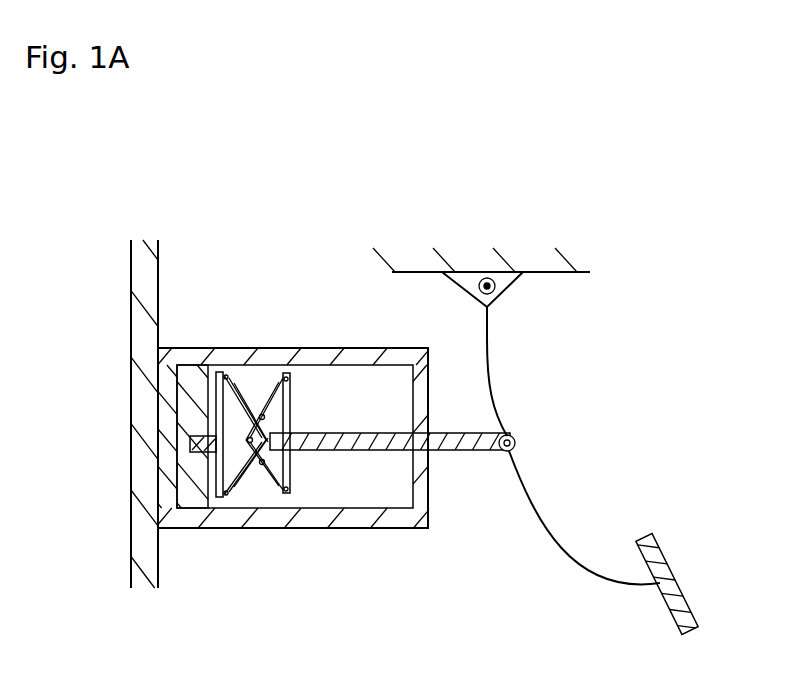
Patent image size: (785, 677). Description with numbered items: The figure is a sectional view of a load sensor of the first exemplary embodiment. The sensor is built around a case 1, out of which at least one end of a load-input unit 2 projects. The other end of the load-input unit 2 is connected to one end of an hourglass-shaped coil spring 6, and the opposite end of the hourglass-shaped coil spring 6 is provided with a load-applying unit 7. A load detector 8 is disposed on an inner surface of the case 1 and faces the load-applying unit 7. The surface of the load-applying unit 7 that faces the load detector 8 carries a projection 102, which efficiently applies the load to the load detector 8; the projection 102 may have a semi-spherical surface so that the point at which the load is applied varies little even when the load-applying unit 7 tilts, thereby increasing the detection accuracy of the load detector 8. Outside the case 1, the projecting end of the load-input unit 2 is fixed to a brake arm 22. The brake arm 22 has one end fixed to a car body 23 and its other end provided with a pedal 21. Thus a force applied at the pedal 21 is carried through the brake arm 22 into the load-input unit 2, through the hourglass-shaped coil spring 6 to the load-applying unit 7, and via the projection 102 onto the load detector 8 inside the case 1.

The case 1 is at (355, 520).
The load-input unit 2 is at (453, 446).
The hourglass-shaped coil spring 6 is at (275, 483).
The load-applying unit 7 is at (217, 507).
The load detector 8 is at (193, 388).
The pedal 21 is at (681, 577).
The brake arm 22 is at (540, 507).
The car body 23 is at (140, 397).
The projection 102 is at (205, 453).